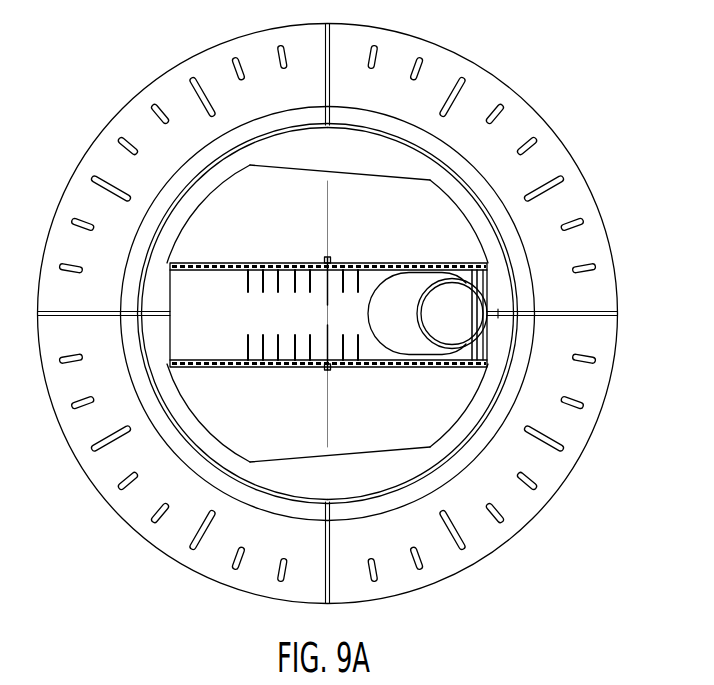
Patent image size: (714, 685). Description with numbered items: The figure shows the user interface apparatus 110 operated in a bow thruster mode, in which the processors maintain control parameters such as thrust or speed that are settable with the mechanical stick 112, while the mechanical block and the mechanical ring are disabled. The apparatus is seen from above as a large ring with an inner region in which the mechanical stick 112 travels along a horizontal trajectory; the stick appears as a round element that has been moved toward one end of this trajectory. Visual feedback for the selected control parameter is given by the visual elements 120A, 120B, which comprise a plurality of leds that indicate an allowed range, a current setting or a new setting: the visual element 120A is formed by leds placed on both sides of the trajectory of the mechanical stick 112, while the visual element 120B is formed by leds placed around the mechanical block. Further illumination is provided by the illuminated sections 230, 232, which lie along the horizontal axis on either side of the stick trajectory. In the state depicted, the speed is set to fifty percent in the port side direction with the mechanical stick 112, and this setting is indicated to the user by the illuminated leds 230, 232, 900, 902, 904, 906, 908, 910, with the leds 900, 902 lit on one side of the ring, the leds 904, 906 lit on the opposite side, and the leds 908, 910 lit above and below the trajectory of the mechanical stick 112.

The user interface apparatus 110 is at (78, 50).
The mechanical stick 112 is at (422, 347).
The visual element 120A is at (285, 263).
The visual element 120B is at (353, 128).
The illuminated section 230 is at (498, 318).
The illuminated section 232 is at (171, 314).
The illuminated led 900 is at (520, 302).
The illuminated led 902 is at (517, 322).
The illuminated led 904 is at (139, 311).
The illuminated led 906 is at (143, 318).
The illuminated led 908 is at (329, 250).
The illuminated led 910 is at (329, 375).